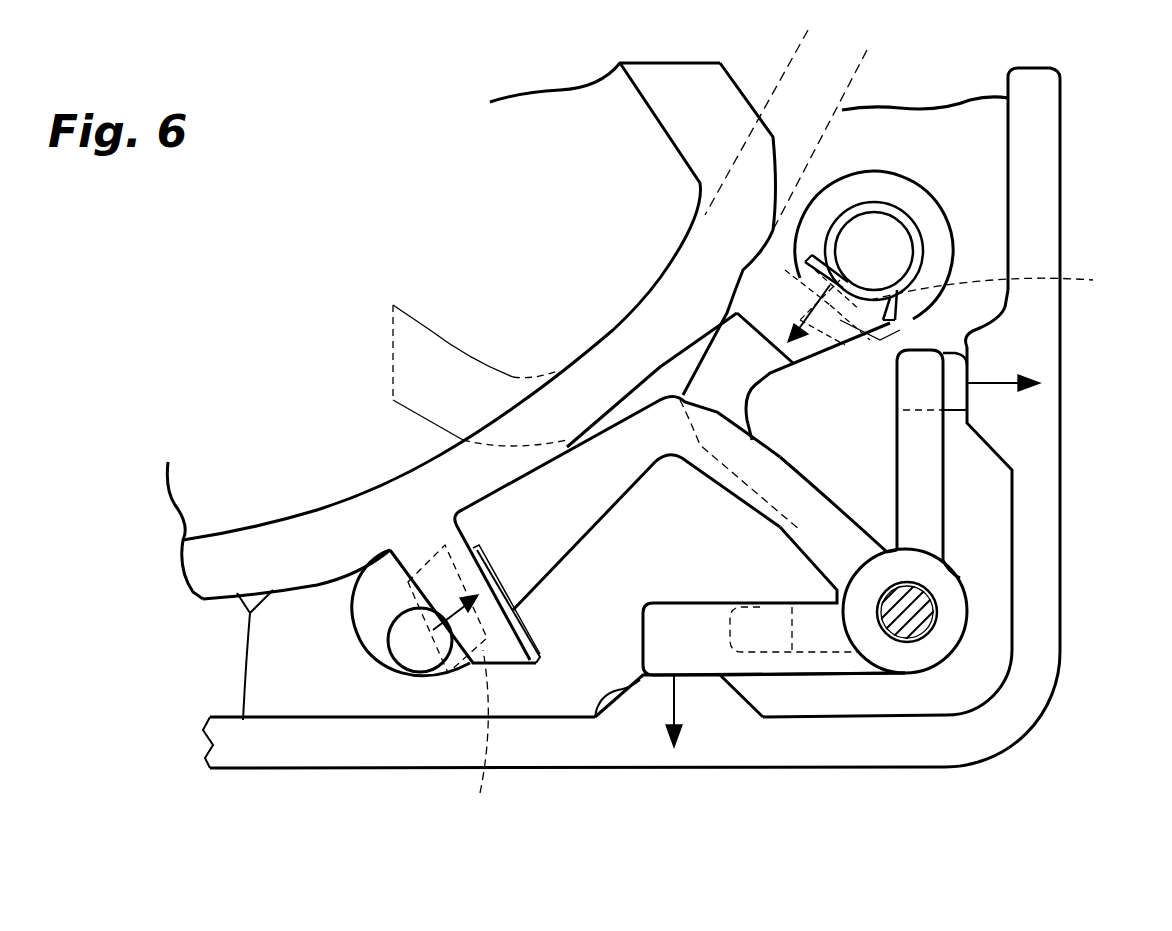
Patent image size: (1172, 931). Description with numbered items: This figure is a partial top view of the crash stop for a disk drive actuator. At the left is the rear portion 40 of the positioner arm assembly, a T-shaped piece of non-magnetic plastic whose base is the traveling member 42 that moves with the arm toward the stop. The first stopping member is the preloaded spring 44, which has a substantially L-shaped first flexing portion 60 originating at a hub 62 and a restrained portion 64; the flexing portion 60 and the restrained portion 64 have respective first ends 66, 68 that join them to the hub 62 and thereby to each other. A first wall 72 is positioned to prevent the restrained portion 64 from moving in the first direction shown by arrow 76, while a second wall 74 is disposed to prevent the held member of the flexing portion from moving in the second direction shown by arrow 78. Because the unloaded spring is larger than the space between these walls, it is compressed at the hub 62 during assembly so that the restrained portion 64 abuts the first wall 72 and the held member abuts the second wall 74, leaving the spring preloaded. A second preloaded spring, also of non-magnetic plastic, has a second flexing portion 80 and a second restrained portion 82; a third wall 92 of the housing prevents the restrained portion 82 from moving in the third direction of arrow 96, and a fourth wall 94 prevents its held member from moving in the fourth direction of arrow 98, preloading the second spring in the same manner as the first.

The rear portion 40 is at (247, 612).
The traveling member 42 is at (510, 666).
The preloaded spring 44 is at (620, 508).
The first flexing portion 60 is at (780, 527).
The hub 62 is at (947, 635).
The restrained portion 64 is at (792, 665).
The first end of flexing portion 66 is at (870, 550).
The first end of restrained portion 68 is at (853, 667).
The first wall 72 is at (590, 715).
The second wall 74 is at (471, 738).
The arrow 76 is at (677, 693).
The arrow 78 is at (482, 560).
The second flexing portion 80 is at (768, 376).
The second restrained portion 82 is at (953, 488).
The third wall 92 is at (977, 320).
The fourth wall 94 is at (1001, 284).
The arrow 96 is at (995, 383).
The arrow 98 is at (805, 300).